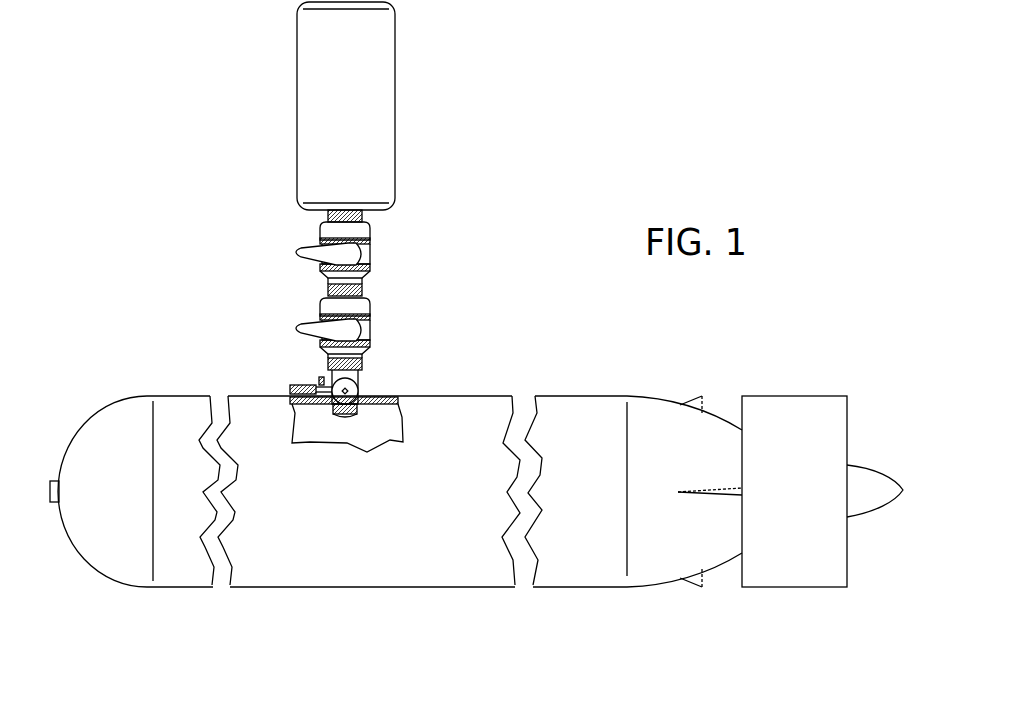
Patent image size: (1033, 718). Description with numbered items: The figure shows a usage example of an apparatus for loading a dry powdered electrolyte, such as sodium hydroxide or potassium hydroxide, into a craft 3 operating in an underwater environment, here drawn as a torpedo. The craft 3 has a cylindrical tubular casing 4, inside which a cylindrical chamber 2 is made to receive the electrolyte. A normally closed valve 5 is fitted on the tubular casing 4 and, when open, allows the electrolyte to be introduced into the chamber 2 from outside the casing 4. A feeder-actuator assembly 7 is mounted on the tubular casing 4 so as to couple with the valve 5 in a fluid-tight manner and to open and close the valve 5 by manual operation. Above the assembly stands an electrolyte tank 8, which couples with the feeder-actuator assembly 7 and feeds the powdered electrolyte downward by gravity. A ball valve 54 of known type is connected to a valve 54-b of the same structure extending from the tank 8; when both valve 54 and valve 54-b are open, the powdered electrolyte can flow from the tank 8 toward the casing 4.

The electrolyte tank 8 is at (365, 67).
The valve 54-b is at (383, 252).
The valve 54 is at (384, 318).
The valve 5 is at (372, 380).
The feeder-actuator assembly 7 is at (305, 372).
The craft 3 is at (476, 443).
The tubular casing 4 is at (477, 389).
The chamber 2 is at (358, 430).